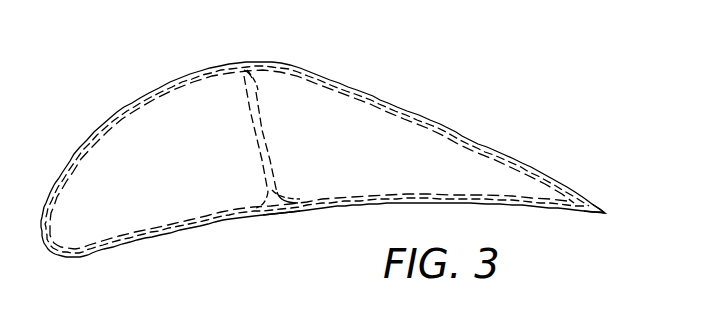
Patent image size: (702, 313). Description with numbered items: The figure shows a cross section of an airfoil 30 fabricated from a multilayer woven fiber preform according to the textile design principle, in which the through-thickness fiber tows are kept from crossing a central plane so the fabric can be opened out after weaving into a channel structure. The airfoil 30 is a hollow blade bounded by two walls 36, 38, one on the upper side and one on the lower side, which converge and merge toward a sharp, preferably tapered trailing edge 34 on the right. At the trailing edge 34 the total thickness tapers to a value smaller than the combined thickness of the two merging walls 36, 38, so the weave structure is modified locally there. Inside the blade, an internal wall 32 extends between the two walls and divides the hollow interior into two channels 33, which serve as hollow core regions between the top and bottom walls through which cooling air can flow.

The airfoil 30 is at (550, 104).
The internal wall 32 is at (266, 122).
The channels 33 is at (182, 168).
The trailing edge 34 is at (605, 207).
The merging wall 36 is at (374, 100).
The merging wall 38 is at (282, 212).